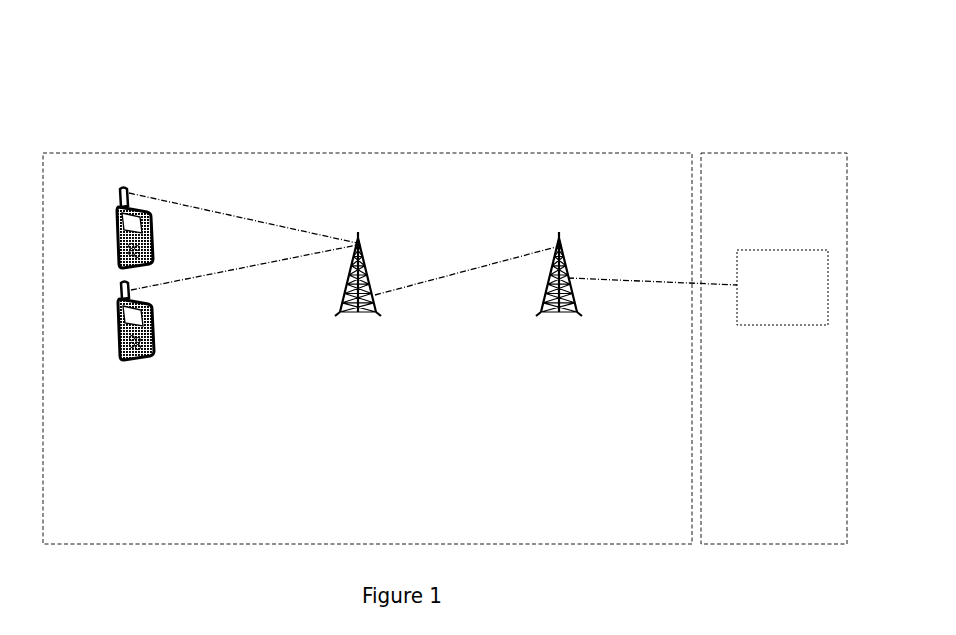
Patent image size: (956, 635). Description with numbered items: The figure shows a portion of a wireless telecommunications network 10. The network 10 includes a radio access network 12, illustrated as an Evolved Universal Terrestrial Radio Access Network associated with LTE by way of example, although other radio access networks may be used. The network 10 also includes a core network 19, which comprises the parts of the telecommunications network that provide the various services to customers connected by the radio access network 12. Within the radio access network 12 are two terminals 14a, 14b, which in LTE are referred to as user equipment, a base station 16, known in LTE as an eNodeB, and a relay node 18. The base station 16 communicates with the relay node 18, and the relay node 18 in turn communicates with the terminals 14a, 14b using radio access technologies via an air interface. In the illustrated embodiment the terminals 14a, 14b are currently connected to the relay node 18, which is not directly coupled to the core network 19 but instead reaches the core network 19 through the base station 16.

The wireless telecommunications network 10 is at (458, 110).
The radio access network 12 is at (672, 185).
The terminal 14a is at (112, 232).
The terminal 14b is at (115, 333).
The base station 16 is at (573, 271).
The relay node 18 is at (372, 284).
The core network 19 is at (776, 310).